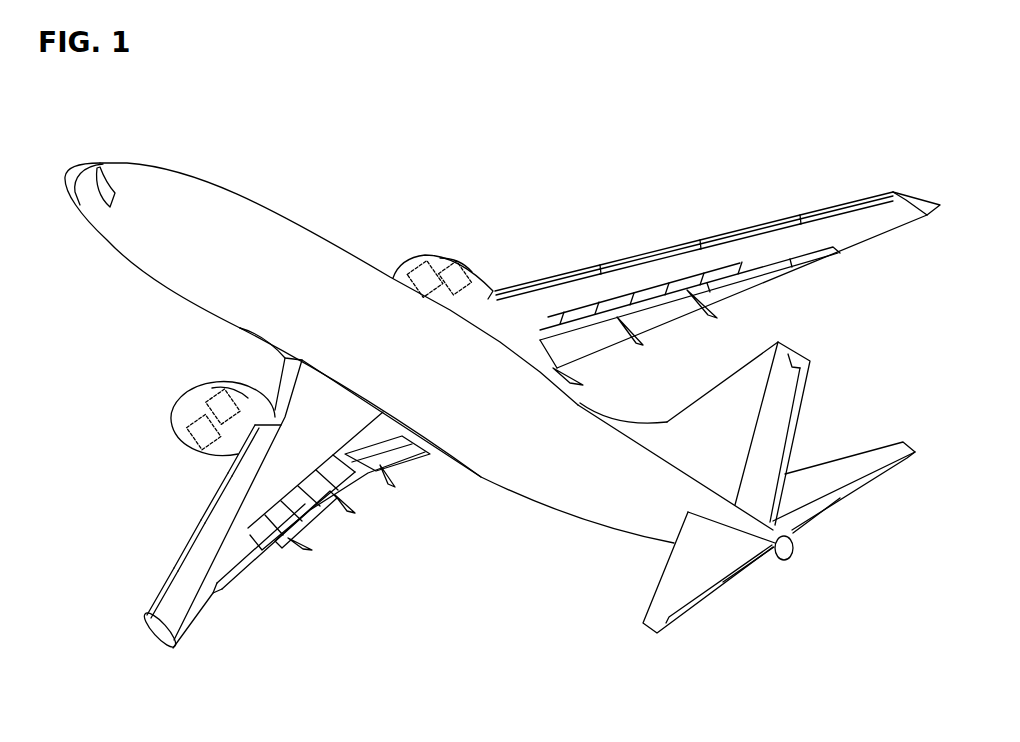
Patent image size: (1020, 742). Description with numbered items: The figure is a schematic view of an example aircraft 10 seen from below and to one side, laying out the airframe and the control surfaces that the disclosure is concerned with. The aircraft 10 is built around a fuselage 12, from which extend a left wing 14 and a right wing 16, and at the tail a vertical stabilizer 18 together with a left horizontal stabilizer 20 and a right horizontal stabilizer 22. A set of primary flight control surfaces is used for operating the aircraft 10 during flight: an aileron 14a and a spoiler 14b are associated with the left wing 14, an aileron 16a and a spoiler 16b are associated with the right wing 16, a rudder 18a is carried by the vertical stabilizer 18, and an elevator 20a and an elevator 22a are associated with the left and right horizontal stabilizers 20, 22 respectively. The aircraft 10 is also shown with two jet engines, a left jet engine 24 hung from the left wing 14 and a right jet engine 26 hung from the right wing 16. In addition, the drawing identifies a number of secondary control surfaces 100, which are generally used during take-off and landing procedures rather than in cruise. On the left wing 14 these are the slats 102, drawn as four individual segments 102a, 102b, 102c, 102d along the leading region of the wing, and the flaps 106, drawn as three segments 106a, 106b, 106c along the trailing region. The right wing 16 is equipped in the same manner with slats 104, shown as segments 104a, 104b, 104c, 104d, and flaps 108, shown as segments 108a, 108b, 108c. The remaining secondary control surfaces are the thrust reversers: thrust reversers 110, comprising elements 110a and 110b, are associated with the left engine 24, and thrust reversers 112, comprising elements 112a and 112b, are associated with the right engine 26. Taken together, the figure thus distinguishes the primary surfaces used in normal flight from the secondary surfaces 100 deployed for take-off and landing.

The aircraft 10 is at (236, 141).
The fuselage 12 is at (112, 225).
The left wing 14 is at (196, 621).
The aileron 14a is at (224, 592).
The spoiler 14b is at (342, 491).
The right wing 16 is at (882, 225).
The aileron 16a is at (622, 318).
The spoiler 16b is at (813, 251).
The vertical stabilizer 18 is at (779, 398).
The rudder 18a is at (791, 441).
The left horizontal stabilizer 20 is at (672, 588).
The elevator 20a is at (712, 590).
The right horizontal stabilizer 22 is at (906, 458).
The elevator 22a is at (848, 489).
The jet engine 24 is at (234, 390).
The jet engine 26 is at (453, 262).
The secondary control surfaces 100 is at (81, 376).
The slats 102 is at (156, 523).
The slat 102a is at (232, 462).
The slat 102b is at (228, 497).
The slat 102c is at (202, 556).
The slat 102d is at (186, 601).
The slats 104 is at (640, 219).
The slat 104a is at (556, 276).
The slat 104b is at (640, 252).
The slat 104c is at (746, 229).
The slat 104d is at (851, 204).
The flaps 106 is at (306, 568).
The flap 106a is at (426, 476).
The flap 106b is at (321, 526).
The flap 106c is at (256, 576).
The flaps 108 is at (779, 318).
The flap 108a is at (577, 377).
The flap 108b is at (656, 311).
The flap 108c is at (771, 271).
The thrust reversers 110 is at (166, 386).
The thrust reverser 110a is at (213, 401).
The thrust reverser 110b is at (200, 425).
The thrust reversers 112 is at (381, 226).
The thrust reverser 112a is at (421, 266).
The thrust reverser 112b is at (441, 266).